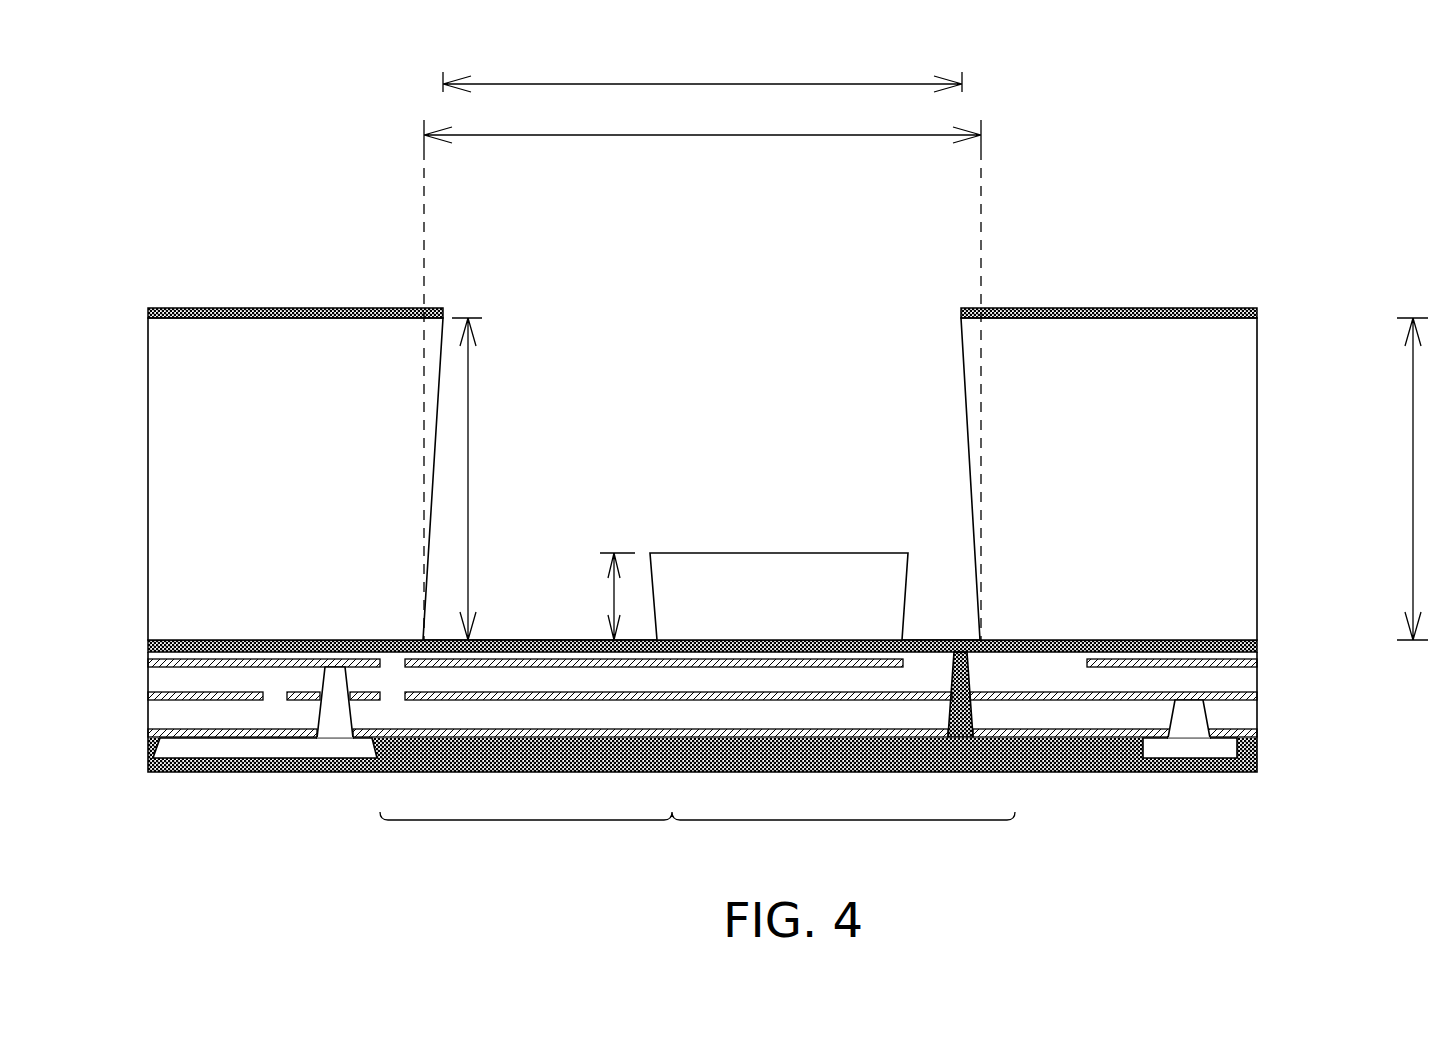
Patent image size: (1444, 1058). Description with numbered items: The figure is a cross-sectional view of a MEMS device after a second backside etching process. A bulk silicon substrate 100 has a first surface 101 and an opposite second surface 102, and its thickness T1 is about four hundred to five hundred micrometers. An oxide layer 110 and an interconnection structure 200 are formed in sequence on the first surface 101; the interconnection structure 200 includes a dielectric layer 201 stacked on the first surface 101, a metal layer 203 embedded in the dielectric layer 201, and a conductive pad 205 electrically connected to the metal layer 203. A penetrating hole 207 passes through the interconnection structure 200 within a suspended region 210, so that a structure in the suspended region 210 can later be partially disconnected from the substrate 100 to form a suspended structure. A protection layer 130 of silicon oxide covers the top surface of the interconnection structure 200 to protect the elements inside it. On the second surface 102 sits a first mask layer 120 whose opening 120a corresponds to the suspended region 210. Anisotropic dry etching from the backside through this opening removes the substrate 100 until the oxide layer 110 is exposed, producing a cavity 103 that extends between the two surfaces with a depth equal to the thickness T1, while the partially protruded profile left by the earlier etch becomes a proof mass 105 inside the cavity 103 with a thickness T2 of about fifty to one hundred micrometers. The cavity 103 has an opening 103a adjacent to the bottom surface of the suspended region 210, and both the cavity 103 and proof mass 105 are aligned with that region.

The substrate 100 is at (281, 446).
The first surface 101 is at (1210, 640).
The second surface 102 is at (200, 318).
The cavity 103 is at (779, 338).
The opening of the cavity 103a is at (702, 125).
The proof mass 105 is at (804, 614).
The oxide layer 110 is at (157, 645).
The first mask layer 120 is at (1250, 313).
The opening of the first mask layer 120a is at (702, 73).
The protection layer 130 is at (157, 767).
The interconnection structure 200 is at (735, 739).
The dielectric layer 201 is at (160, 712).
The metal layer 203 is at (148, 735).
The conductive pad 205 is at (335, 733).
The penetrating hole 207 is at (966, 745).
The suspended region 210 is at (697, 837).
The thickness of the substrate T1 is at (940, 479).
The thickness of the proof mass T2 is at (601, 596).